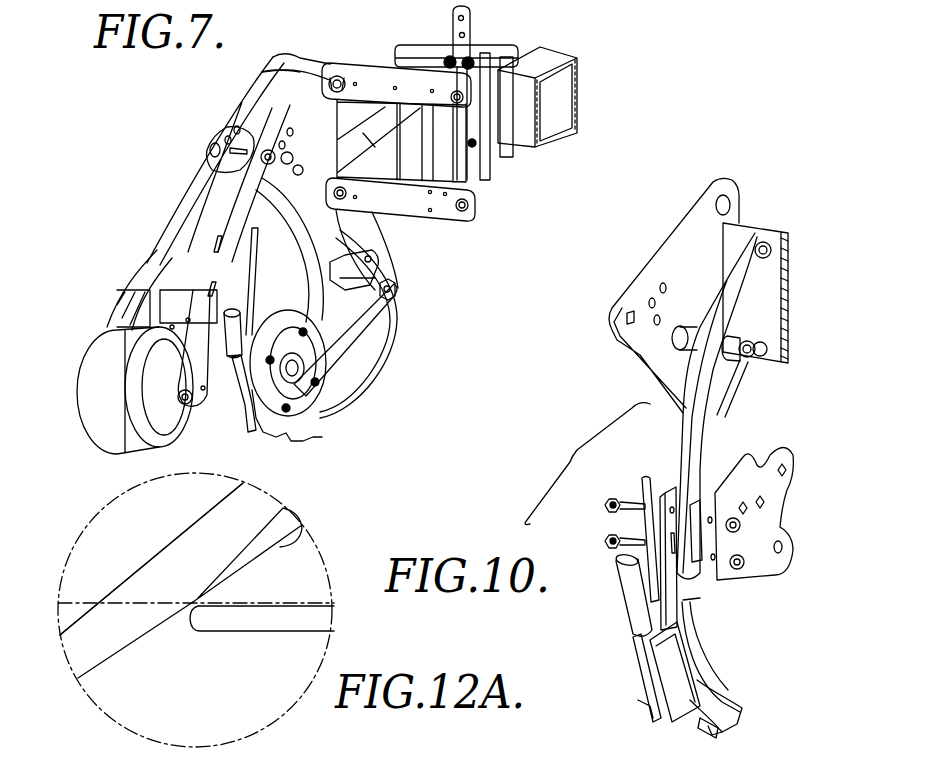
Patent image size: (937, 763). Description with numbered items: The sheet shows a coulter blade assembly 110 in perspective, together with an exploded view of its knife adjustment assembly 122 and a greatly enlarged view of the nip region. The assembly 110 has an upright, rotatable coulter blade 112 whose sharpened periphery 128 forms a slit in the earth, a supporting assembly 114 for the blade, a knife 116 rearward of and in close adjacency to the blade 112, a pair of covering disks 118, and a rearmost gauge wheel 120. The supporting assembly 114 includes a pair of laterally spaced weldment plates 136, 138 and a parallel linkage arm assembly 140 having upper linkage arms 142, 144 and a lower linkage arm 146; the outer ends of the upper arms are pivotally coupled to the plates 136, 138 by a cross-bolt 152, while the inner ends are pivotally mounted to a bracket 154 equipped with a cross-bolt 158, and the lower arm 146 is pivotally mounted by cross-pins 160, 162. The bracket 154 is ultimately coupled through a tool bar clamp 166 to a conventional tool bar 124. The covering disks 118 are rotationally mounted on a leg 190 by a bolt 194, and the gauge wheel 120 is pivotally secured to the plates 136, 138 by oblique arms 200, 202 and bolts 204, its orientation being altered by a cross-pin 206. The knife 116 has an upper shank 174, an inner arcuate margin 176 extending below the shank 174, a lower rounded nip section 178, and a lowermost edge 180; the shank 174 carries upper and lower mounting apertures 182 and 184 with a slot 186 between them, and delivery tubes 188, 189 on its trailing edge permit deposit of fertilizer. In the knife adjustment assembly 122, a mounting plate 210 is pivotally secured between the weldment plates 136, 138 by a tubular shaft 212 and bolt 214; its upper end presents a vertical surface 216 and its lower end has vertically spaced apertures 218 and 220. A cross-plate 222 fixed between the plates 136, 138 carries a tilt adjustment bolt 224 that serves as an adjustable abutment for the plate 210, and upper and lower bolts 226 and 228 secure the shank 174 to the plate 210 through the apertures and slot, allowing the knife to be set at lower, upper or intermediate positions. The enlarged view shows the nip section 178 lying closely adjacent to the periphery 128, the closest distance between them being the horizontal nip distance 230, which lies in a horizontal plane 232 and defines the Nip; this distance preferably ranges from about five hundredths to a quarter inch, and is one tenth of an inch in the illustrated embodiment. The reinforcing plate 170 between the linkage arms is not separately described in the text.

In FIG. 7, the coulter blade assembly 110 is at (622, 102).
In FIG. 7, the coulter blade 112 is at (418, 330).
In FIG. 12A, the coulter blade 112 is at (92, 540).
In FIG. 7, the supporting assembly 114 is at (140, 102).
In FIG. 7, the knife 116 is at (236, 392).
In FIG. 10, the knife 116 is at (630, 692).
In FIG. 12A, the knife 116 is at (328, 592).
In FIG. 7, the covering disks 118 is at (317, 430).
In FIG. 7, the gauge wheel 120 is at (92, 296).
In FIG. 10, the knife adjustment assembly 122 is at (779, 182).
In FIG. 7, the tool bar 124 is at (568, 80).
In FIG. 7, the sharpened periphery 128 is at (345, 395).
In FIG. 12A, the sharpened periphery 128 is at (112, 660).
In FIG. 7, the weldment plate 136 is at (272, 116).
In FIG. 7, the weldment plate 138 is at (255, 100).
In FIG. 10, the weldment plate 138 is at (660, 276).
In FIG. 7, the parallel linkage arm assembly 140 is at (490, 236).
In FIG. 7, the upper linkage arm 142 is at (368, 80).
In FIG. 7, the upper linkage arm 144 is at (300, 60).
In FIG. 7, the lower linkage arm 146 is at (440, 213).
In FIG. 7, the cross-bolt 152 is at (343, 74).
In FIG. 7, the bracket 154 is at (472, 165).
In FIG. 7, the cross-bolt 158 is at (464, 98).
In FIG. 7, the cross-pin 160 is at (470, 205).
In FIG. 7, the cross-pin 162 is at (346, 195).
In FIG. 7, the tool bar clamp 166 is at (515, 52).
In FIG. 7, the vertical plate 170 is at (365, 132).
In FIG. 10, the upper shank 174 is at (694, 612).
In FIG. 10, the inner arcuate margin 176 is at (716, 696).
In FIG. 12A, the inner arcuate margin 176 is at (275, 547).
In FIG. 10, the lower rounded nip section 178 is at (736, 712).
In FIG. 12A, the lower rounded nip section 178 is at (200, 631).
In FIG. 10, the lowermost edge 180 is at (712, 730).
In FIG. 10, the upper mounting aperture 182 is at (674, 490).
In FIG. 10, the lower mounting aperture 184 is at (700, 602).
In FIG. 10, the slot 186 is at (700, 525).
In FIG. 7, the delivery tube 188 is at (236, 284).
In FIG. 10, the delivery tube 188 is at (632, 594).
In FIG. 7, the delivery tube 189 is at (232, 250).
In FIG. 10, the delivery tube 189 is at (642, 486).
In FIG. 7, the leg 190 is at (362, 344).
In FIG. 7, the bolt 194 is at (325, 378).
In FIG. 7, the oblique arm 200 is at (192, 365).
In FIG. 7, the oblique arm 202 is at (152, 266).
In FIG. 7, the bolt 204 is at (218, 160).
In FIG. 7, the cross-pin 206 is at (236, 130).
In FIG. 7, the mounting plate 210 is at (262, 224).
In FIG. 10, the mounting plate 210 is at (710, 414).
In FIG. 10, the tubular shaft 212 is at (680, 346).
In FIG. 7, the bolt 214 is at (300, 166).
In FIG. 10, the bolt 214 is at (764, 360).
In FIG. 10, the vertical surface 216 is at (760, 282).
In FIG. 10, the aperture 218 is at (732, 512).
In FIG. 10, the aperture 220 is at (727, 567).
In FIG. 7, the cross-plate 222 is at (272, 98).
In FIG. 10, the cross-plate 222 is at (768, 234).
In FIG. 10, the tilt adjustment bolt 224 is at (771, 260).
In FIG. 10, the upper bolt 226 is at (606, 506).
In FIG. 10, the lower bolt 228 is at (606, 542).
In FIG. 12A, the horizontal nip distance 230 is at (192, 592).
In FIG. 12A, the horizontal plane 232 is at (150, 600).
In FIG. 12A, the nip Nip is at (185, 628).